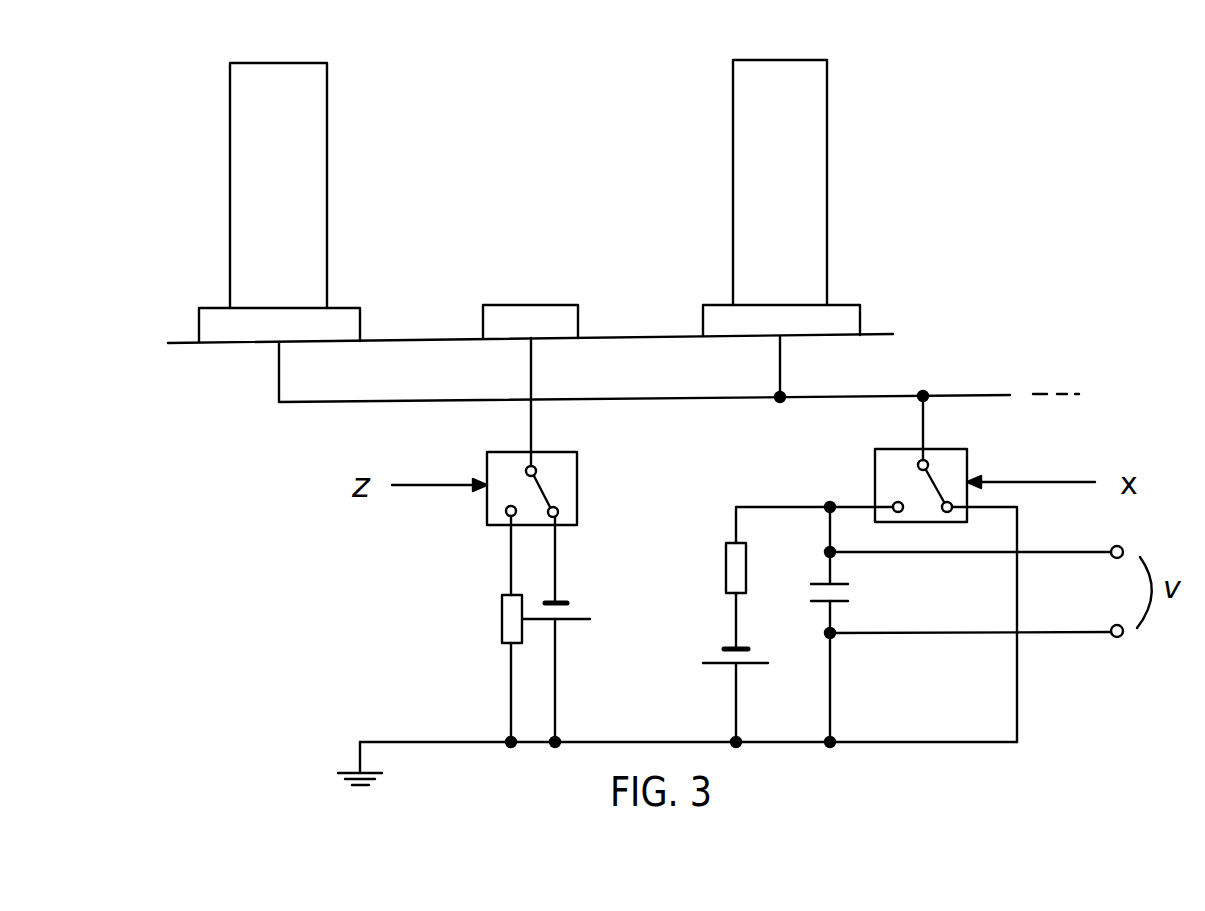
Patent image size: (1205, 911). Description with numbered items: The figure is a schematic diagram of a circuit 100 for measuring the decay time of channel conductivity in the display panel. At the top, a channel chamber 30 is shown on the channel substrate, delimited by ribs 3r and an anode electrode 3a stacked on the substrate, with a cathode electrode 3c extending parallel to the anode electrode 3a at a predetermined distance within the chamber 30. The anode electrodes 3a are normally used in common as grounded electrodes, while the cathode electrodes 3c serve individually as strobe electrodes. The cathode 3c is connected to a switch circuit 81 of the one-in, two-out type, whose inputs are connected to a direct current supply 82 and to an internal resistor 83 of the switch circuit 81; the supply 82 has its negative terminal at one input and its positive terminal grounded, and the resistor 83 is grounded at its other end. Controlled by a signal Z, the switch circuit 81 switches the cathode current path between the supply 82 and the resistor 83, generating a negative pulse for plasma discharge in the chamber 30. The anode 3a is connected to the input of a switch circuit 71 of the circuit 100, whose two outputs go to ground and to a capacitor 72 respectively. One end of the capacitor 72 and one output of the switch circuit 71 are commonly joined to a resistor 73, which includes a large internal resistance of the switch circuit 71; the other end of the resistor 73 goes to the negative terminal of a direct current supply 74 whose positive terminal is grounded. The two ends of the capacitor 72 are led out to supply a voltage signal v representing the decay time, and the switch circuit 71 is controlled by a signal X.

The channel chamber 30 is at (546, 153).
The rib 3r is at (827, 87).
The anode electrode 3a is at (860, 305).
The cathode electrode 3c is at (578, 305).
The switch circuit 81 is at (577, 477).
The direct current supply 82 is at (578, 602).
The internal resistor 83 is at (502, 612).
The switch circuit 71 is at (967, 468).
The capacitor 72 is at (852, 590).
The resistor 73 is at (712, 557).
The direct current supply 74 is at (717, 650).
The circuit 100 is at (1045, 753).